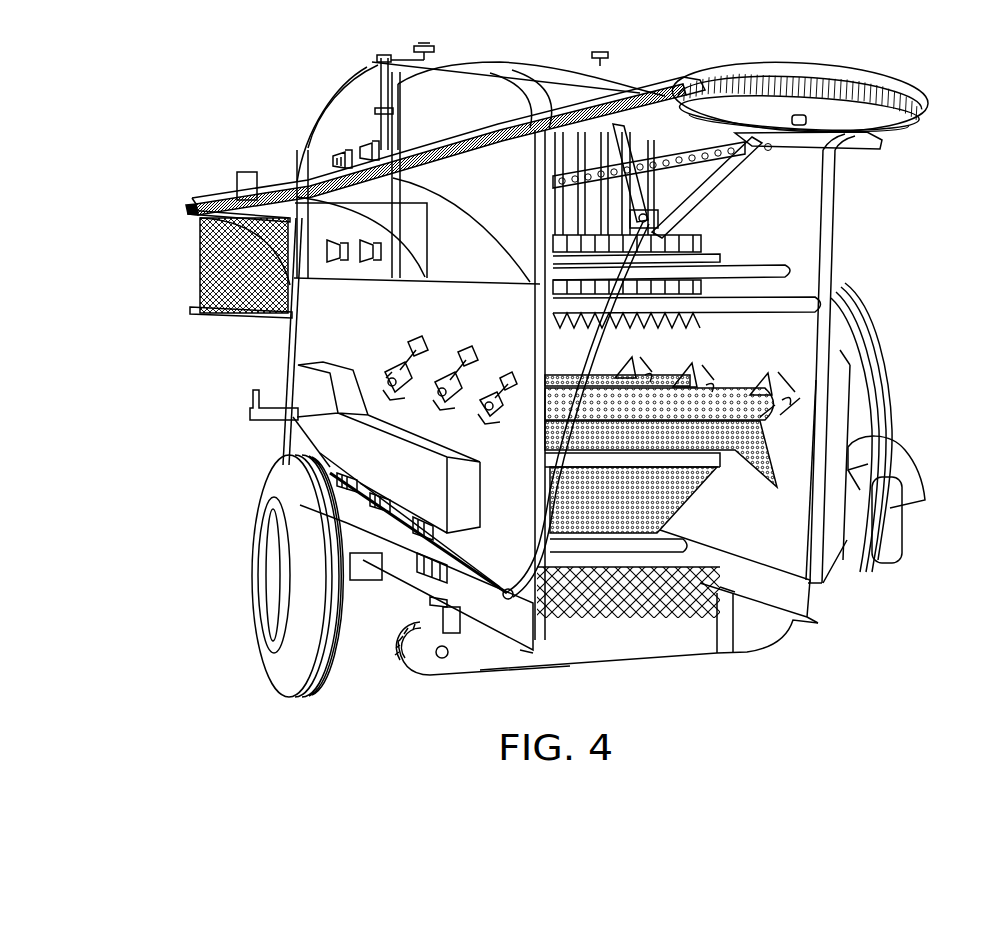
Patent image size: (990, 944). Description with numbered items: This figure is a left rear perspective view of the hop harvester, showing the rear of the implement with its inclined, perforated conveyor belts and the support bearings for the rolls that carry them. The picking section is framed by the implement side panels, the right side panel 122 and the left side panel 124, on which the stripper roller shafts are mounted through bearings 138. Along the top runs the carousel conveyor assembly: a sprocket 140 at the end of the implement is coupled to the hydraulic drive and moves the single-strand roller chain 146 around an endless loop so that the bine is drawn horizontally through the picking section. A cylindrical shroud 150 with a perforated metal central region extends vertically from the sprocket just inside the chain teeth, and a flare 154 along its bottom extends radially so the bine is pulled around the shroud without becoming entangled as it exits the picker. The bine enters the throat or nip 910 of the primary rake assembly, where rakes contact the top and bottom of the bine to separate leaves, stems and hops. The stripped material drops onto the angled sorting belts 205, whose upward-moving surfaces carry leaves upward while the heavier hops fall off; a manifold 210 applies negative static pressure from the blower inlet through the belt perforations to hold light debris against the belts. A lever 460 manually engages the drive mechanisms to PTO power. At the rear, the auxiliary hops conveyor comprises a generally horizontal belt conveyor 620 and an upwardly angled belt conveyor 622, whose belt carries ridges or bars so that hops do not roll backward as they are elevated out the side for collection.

The right side panel 122 is at (800, 215).
The left side panel 124 is at (502, 106).
The bearings 138 is at (337, 157).
The sprocket 140 is at (755, 83).
The roller chain 146 is at (550, 118).
The cylindrical shroud 150 is at (200, 258).
The flare 154 is at (190, 307).
The sorting belts 205 is at (660, 368).
The manifold 210 is at (313, 387).
The lever 460 is at (265, 420).
The horizontal belt conveyor 620 is at (463, 663).
The upwardly angled belt conveyor 622 is at (847, 530).
The nip 910 is at (690, 236).